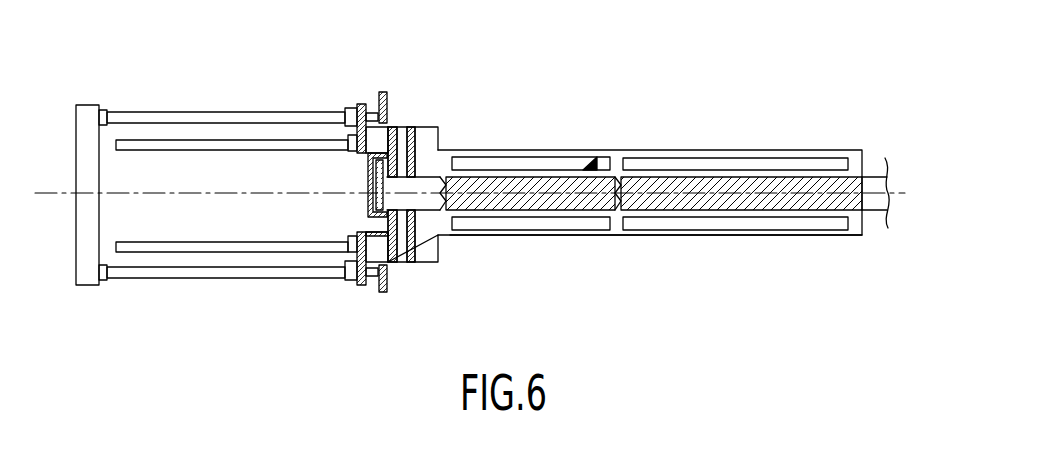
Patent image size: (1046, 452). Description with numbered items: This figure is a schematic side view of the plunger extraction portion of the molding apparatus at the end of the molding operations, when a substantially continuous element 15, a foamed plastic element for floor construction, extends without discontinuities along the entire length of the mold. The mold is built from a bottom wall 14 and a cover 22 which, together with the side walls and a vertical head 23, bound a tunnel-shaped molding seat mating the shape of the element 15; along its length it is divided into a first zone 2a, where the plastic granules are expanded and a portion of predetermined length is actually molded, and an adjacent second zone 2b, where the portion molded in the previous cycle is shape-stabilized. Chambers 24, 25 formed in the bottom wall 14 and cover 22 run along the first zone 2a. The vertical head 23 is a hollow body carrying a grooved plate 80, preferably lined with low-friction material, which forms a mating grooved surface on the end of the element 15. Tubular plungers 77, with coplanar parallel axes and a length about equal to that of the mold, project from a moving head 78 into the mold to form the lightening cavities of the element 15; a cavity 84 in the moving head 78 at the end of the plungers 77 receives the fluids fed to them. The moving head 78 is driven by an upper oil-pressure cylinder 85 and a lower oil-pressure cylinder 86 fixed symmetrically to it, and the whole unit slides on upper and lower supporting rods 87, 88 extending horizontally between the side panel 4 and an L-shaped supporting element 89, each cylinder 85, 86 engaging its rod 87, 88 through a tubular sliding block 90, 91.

The first zone 2a is at (588, 190).
The second zone 2b is at (694, 190).
The side panel 4 is at (381, 96).
The bottom wall 14 is at (543, 237).
The continuous element 15 is at (597, 160).
The cover 22 is at (543, 150).
The vertical head 23 is at (392, 258).
The chamber 24 is at (587, 232).
The chamber 25 is at (492, 157).
The tubular plungers 77 is at (748, 226).
The moving head 78 is at (368, 162).
The grooved plate 80 is at (420, 127).
The cavity 84 is at (376, 168).
The upper oil-pressure cylinder 85 is at (220, 140).
The lower oil-pressure cylinder 86 is at (205, 242).
The upper supporting rod 87 is at (150, 112).
The lower supporting rod 88 is at (222, 279).
The L-shaped supporting element 89 is at (88, 284).
The tubular sliding block 90 is at (356, 110).
The tubular sliding block 91 is at (358, 284).